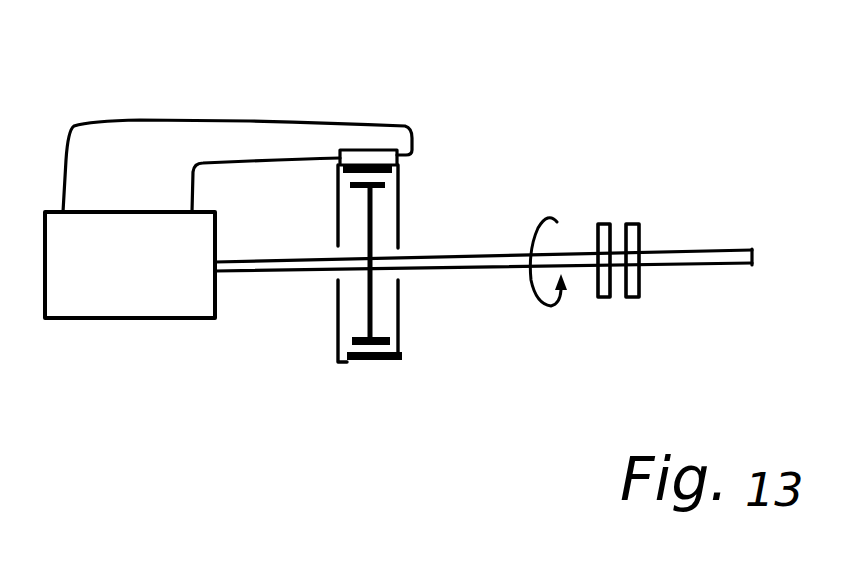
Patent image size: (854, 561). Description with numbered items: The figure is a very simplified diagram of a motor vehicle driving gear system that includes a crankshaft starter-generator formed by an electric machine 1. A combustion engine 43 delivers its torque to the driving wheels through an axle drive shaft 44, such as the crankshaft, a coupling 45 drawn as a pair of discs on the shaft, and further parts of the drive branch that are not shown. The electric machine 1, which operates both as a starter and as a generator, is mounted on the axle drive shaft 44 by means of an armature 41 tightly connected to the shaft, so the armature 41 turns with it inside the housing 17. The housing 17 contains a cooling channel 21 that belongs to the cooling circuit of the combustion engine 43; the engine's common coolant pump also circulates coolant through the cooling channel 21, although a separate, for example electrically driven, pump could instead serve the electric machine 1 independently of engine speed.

The electric machine 1 is at (410, 193).
The housing 17 is at (402, 353).
The cooling channel 21 is at (372, 158).
The armature 41 is at (367, 310).
The combustion engine 43 is at (133, 235).
The axle drive shaft 44 is at (458, 257).
The coupling 45 is at (620, 226).